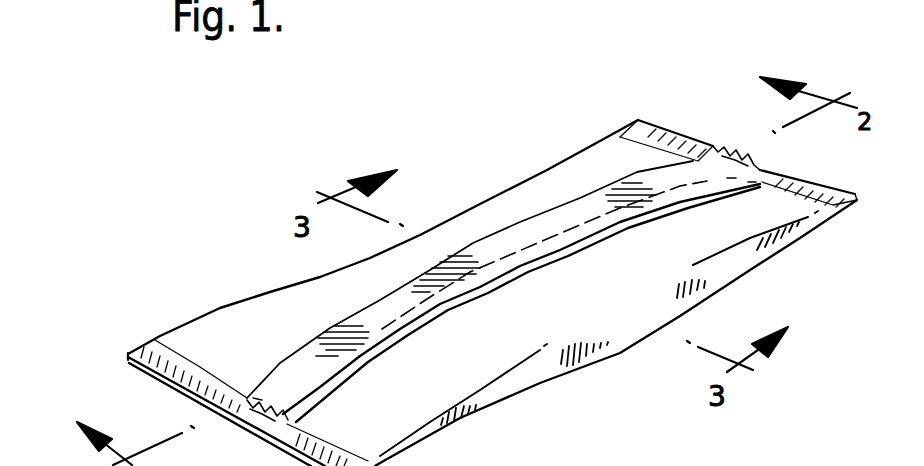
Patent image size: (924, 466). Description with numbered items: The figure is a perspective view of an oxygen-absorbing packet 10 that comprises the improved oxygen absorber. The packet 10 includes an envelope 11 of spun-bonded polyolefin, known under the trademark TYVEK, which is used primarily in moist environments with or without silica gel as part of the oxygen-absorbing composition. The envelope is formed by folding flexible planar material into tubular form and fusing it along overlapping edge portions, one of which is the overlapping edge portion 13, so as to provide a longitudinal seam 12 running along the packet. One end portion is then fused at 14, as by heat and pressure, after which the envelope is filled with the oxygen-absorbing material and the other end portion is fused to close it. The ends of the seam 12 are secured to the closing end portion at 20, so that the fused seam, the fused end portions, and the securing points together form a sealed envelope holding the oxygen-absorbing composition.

The packet 10 is at (206, 275).
The envelope 11 is at (593, 368).
The seam 12 is at (473, 243).
The overlapping edge portion 13 is at (547, 250).
The fused end portion 14 is at (682, 132).
The securing point of seam ends 20 is at (737, 160).